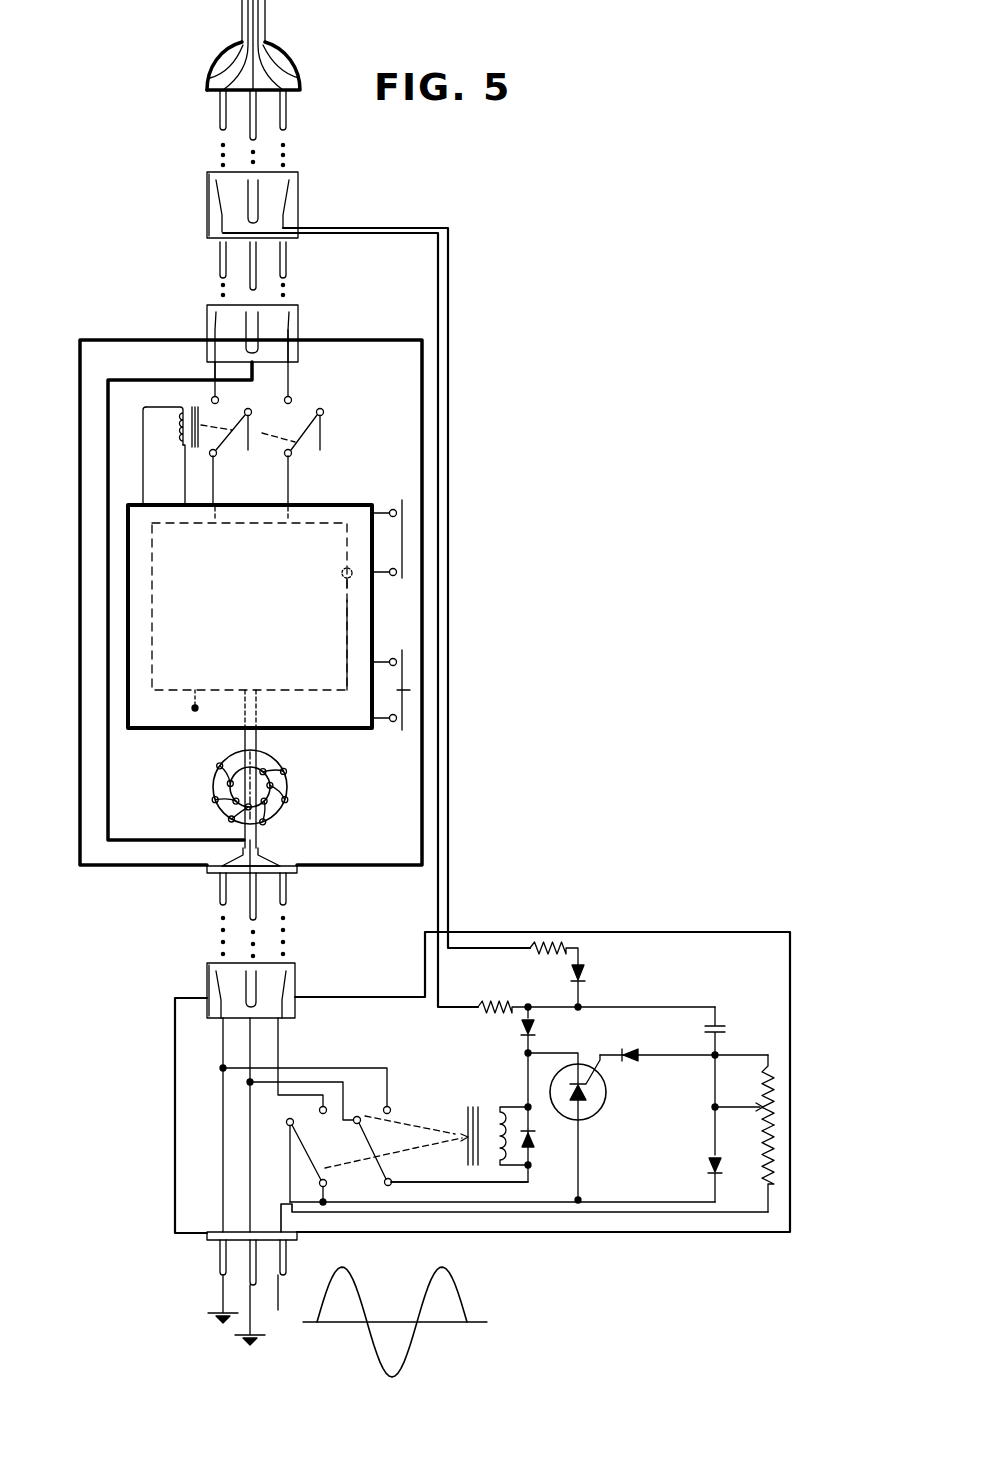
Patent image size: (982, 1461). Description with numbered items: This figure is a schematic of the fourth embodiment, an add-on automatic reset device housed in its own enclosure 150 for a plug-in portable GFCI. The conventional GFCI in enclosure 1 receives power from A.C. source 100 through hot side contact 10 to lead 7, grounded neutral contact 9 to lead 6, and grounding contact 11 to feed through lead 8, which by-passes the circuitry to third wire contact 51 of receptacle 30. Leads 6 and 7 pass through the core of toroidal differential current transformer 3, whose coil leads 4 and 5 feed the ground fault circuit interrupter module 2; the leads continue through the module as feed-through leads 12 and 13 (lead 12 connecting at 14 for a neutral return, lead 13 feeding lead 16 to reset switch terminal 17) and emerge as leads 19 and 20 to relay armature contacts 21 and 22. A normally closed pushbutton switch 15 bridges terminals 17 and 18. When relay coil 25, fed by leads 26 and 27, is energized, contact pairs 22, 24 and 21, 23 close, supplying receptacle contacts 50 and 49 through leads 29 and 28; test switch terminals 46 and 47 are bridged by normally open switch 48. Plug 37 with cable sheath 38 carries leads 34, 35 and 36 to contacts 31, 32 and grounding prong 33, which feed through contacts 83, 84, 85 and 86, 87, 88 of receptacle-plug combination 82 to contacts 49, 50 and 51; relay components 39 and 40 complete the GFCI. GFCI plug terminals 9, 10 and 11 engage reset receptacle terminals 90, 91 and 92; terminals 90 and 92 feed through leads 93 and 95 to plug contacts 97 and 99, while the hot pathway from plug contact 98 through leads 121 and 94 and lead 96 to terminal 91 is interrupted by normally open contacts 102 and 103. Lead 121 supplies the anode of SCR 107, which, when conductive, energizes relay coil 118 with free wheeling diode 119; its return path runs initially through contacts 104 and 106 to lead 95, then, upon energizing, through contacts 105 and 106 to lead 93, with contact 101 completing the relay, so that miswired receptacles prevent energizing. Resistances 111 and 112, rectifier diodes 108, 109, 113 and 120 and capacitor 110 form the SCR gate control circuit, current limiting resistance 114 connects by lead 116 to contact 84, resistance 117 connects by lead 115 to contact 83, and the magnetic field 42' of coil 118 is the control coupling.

The enclosure 1 is at (78, 446).
The ground fault circuit interrupter module 2 is at (174, 730).
The toroidal differential current transformer 3 is at (212, 786).
The transformer coil lead 4 is at (242, 744).
The transformer coil lead 5 is at (259, 744).
The grounded neutral lead 6 is at (234, 860).
The hot side lead 7 is at (268, 858).
The feed through lead 8 is at (152, 378).
The grounded neutral contact 9 is at (219, 886).
The hot side contact 10 is at (287, 888).
The grounding contact 11 is at (252, 914).
The feed-through lead 12 is at (155, 632).
The feed-through lead 13 is at (345, 632).
The module connection point 14 is at (192, 708).
The normally closed pushbutton switch 15 is at (400, 546).
The lead 16 is at (341, 574).
The reset switch terminal 17 is at (393, 578).
The reset switch contact 18 is at (392, 509).
The lead 19 is at (213, 480).
The lead 20 is at (288, 480).
The relay armature contact 21 is at (246, 409).
The relay armature contact 22 is at (323, 409).
The contact 23 is at (211, 400).
The contact 24 is at (285, 396).
The relay coil 25 is at (180, 424).
The coil lead 26 is at (143, 480).
The coil lead 27 is at (184, 480).
The lead 28 is at (236, 335).
The hot lead 29 is at (272, 356).
The receptacle 30 is at (233, 371).
The neutral contact 31 is at (218, 100).
The hot contact 32 is at (288, 100).
The grounding prong 33 is at (253, 130).
The neutral load lead 34 is at (210, 75).
The hot load lead 35 is at (298, 75).
The grounding lead 36 is at (222, 52).
The plug 37 is at (284, 52).
The cable sheath 38 is at (260, 8).
The relay component 39 is at (252, 416).
The relay component 40 is at (323, 420).
The magnetic field of influence 42' is at (396, 1148).
The test switch terminal 46 is at (402, 732).
The test switch terminal 47 is at (390, 658).
The normally open switch 48 is at (395, 694).
The neutral receptacle contact 49 is at (207, 326).
The hot receptacle contact 50 is at (296, 320).
The third wire contact 51 is at (244, 320).
The receptacle-plug combination 82 is at (207, 182).
The contact 83 is at (207, 198).
The contact 84 is at (283, 194).
The contact 85 is at (225, 194).
The contact 86 is at (218, 250).
The contact 87 is at (288, 250).
The contact 88 is at (252, 276).
The automatic reset receptacle terminal 90 is at (207, 988).
The automatic reset receptacle terminal 91 is at (295, 984).
The automatic reset receptacle terminal 92 is at (242, 988).
The lead 93 is at (220, 1052).
The lead 94 is at (280, 1048).
The lead 95 is at (249, 1098).
The lead 96 is at (290, 1162).
The grounded plug contact 97 is at (218, 1254).
The reset circuit plug contact 98 is at (287, 1254).
The grounding plug contact 99 is at (249, 1276).
The A.C. source 100 is at (340, 1326).
The relay contact 101 is at (287, 1126).
The normally open contact 102 is at (308, 1150).
The normally open contact 103 is at (322, 1114).
The relay contact 104 is at (357, 1116).
The relay contact 105 is at (391, 1110).
The relay contact 106 is at (376, 1142).
The SCR 107 is at (608, 1090).
The gate protective rectifier diode 108 is at (640, 1062).
The rectifier diode 109 is at (710, 1164).
The capacitor 110 is at (728, 1030).
The resistance 111 is at (764, 1094).
The resistance 112 is at (764, 1178).
The rectifier diode 113 is at (590, 972).
The current limiting resistance 114 is at (542, 956).
The lead 115 is at (334, 228).
The lead 116 is at (406, 228).
The resistance 117 is at (504, 1014).
The relay coil 118 is at (486, 1110).
The free wheeling diode 119 is at (534, 1138).
The rectifier diode 120 is at (538, 1032).
The lead 121 is at (368, 1200).
The enclosure 150 is at (668, 930).